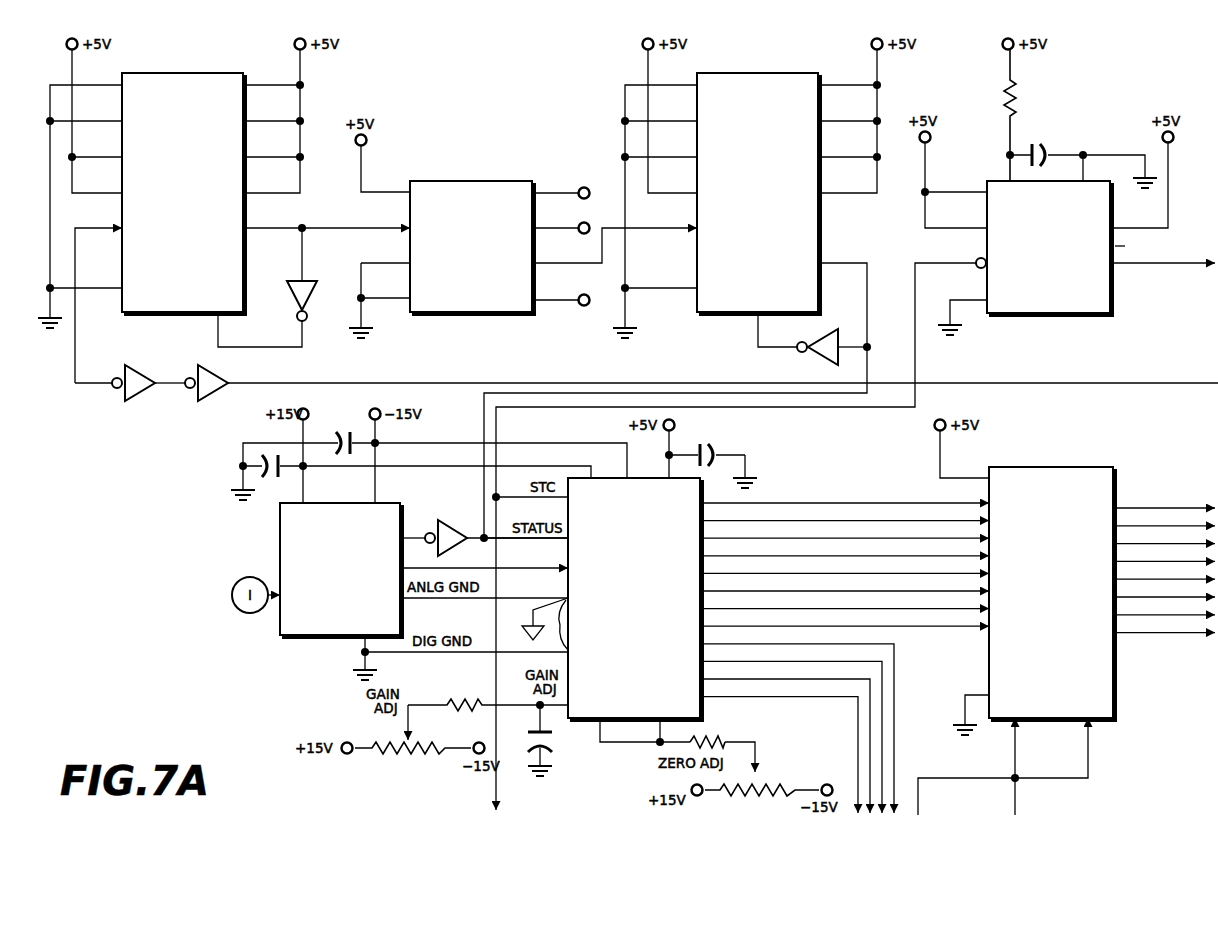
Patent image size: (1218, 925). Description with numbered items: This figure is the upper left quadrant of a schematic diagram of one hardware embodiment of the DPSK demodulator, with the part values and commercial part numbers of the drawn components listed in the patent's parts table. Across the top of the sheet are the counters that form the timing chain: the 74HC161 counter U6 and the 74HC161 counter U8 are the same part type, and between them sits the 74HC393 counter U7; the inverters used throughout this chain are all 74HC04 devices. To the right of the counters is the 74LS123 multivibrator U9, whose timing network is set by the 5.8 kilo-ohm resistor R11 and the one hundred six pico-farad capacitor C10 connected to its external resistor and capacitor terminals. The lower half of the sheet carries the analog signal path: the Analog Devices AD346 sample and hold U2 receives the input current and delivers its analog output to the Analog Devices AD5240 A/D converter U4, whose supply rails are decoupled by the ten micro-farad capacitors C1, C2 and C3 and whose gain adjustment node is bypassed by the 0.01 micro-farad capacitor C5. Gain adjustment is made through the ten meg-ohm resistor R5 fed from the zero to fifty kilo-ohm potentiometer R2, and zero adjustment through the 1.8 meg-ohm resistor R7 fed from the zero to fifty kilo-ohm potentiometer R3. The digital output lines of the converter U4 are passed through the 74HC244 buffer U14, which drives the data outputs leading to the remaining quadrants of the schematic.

The 74HC161 counter U6 is at (183, 204).
The 74HC393 counter U7 is at (462, 232).
The 74HC161 counter U8 is at (758, 216).
The 74LS123 multivibrator U9 is at (1035, 245).
The Analog Devices AD346 sample and hold U2 is at (341, 570).
The Analog Devices AD5240 A/D converter U4 is at (635, 599).
The 74HC244 buffer U14 is at (1035, 610).
The 5.8 kilo-ohm resistor R11 is at (1000, 100).
The 106 pico-farad capacitor C10 is at (1038, 142).
The 10 micro-farad capacitor C1 is at (255, 462).
The 10 micro-farad capacitor C2 is at (352, 456).
The 10 micro-farad capacitor C3 is at (718, 450).
The 0.01 micro-farad capacitor C5 is at (548, 745).
The 10 meg-ohm resistor R5 is at (465, 700).
The 0-50 kilo-ohm resistor R2 is at (368, 760).
The 1.8 meg-ohm resistor R7 is at (725, 735).
The 0-50 kilo-ohm resistor R3 is at (765, 784).